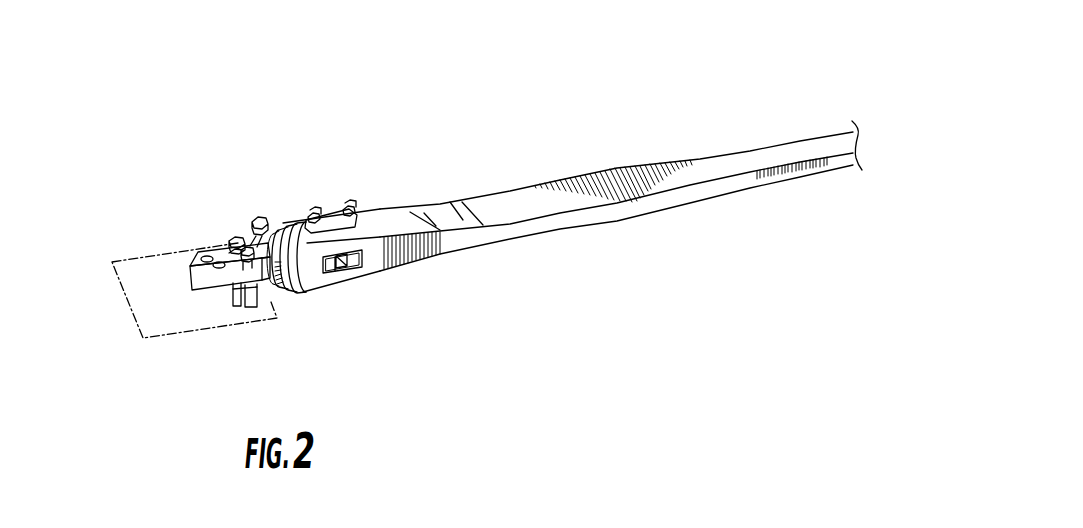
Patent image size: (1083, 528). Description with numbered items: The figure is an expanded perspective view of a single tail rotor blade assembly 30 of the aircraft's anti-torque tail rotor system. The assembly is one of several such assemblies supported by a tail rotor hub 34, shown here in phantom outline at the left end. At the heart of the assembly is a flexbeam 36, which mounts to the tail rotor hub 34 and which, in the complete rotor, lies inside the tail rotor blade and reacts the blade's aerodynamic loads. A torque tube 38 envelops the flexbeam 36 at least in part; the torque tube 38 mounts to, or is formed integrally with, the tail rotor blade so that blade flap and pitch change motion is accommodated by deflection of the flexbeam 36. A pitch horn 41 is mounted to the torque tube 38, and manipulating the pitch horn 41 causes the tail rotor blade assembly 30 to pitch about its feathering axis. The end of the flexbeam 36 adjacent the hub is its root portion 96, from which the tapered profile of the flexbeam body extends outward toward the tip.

The tail rotor blade assembly 30 is at (428, 185).
The tail rotor hub 34 is at (153, 317).
The flexbeam 36 is at (215, 283).
The torque tube 38 is at (321, 300).
The pitch horn 41 is at (362, 262).
The root portion 96 is at (183, 279).